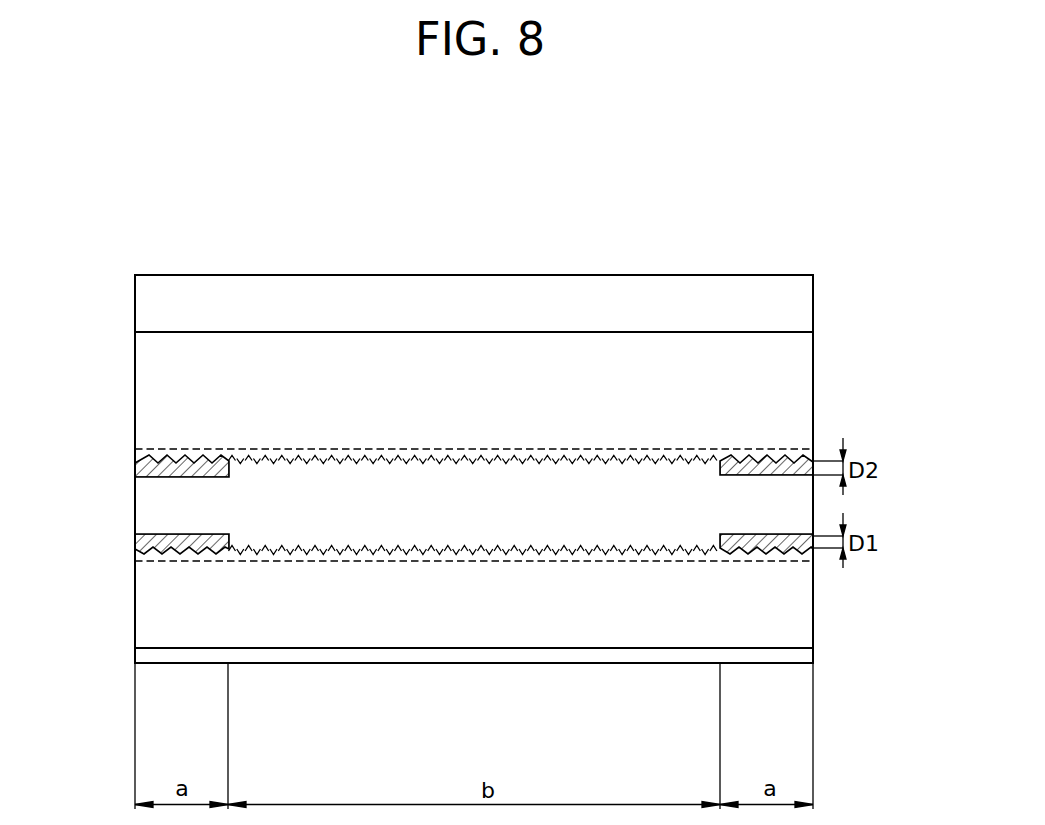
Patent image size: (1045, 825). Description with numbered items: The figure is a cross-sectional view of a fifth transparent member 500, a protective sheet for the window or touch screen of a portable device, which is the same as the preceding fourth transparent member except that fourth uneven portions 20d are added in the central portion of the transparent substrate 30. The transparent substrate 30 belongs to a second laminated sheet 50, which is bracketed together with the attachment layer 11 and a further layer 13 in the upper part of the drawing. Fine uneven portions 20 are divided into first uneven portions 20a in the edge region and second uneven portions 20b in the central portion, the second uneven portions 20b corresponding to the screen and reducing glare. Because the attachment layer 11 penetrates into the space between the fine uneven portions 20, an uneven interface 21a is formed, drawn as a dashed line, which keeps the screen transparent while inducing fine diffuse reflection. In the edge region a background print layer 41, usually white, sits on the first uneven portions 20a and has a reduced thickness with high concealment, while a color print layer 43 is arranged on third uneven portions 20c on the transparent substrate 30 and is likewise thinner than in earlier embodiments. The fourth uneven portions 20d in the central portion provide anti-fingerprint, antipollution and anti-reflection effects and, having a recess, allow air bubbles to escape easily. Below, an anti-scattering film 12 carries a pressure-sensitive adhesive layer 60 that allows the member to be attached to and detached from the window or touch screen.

The fifth transparent member 500 is at (328, 186).
The second laminated sheet 50 is at (565, 212).
The second substrate 13 is at (572, 302).
The transparent substrate 30 is at (617, 375).
The attachment layer 11 is at (648, 488).
The fine uneven portions 20 is at (550, 710).
The first uneven portions 20a is at (735, 553).
The second uneven portions 20b is at (570, 551).
The third uneven portions 20c is at (213, 457).
The fourth uneven portions 20d is at (467, 457).
The uneven interface 21a is at (537, 462).
The background print layer 41 is at (137, 542).
The color print layer 43 is at (138, 468).
The anti-scattering film 12 is at (810, 610).
The pressure-sensitive adhesive layer 60 is at (807, 660).